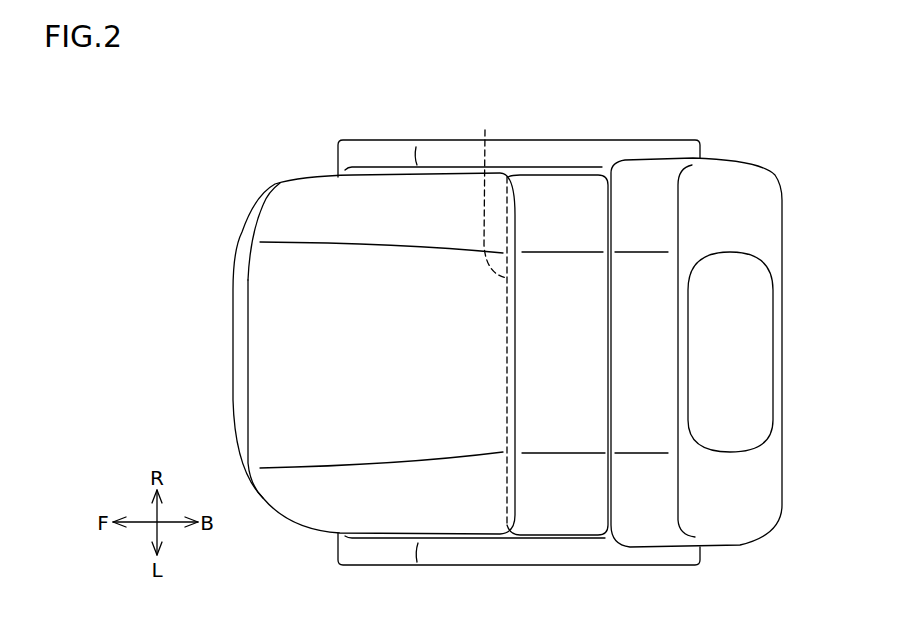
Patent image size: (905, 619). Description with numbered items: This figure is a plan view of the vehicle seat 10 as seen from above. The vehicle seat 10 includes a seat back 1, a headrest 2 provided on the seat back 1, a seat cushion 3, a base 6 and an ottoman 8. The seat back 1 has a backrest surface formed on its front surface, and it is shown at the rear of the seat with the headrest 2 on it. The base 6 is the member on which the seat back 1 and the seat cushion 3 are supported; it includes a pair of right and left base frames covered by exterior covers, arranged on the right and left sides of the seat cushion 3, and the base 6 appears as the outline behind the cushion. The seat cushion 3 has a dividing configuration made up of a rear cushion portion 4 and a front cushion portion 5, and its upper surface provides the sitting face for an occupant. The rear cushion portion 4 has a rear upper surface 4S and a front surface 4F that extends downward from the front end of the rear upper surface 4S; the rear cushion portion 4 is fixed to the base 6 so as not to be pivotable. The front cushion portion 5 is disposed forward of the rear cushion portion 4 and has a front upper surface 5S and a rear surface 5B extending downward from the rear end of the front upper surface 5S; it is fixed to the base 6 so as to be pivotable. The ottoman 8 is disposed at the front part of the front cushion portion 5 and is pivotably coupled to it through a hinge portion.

The vehicle seat 10 is at (183, 112).
The seat back 1 is at (725, 233).
The headrest 2 is at (750, 350).
The seat cushion 3 is at (385, 82).
The rear cushion portion 4 is at (540, 307).
The front surface 4F is at (490, 315).
The rear upper surface 4S is at (557, 340).
The front cushion portion 5 is at (355, 306).
The rear surface 5B is at (516, 271).
The front upper surface 5S is at (429, 340).
The base 6 is at (352, 158).
The ottoman 8 is at (237, 361).